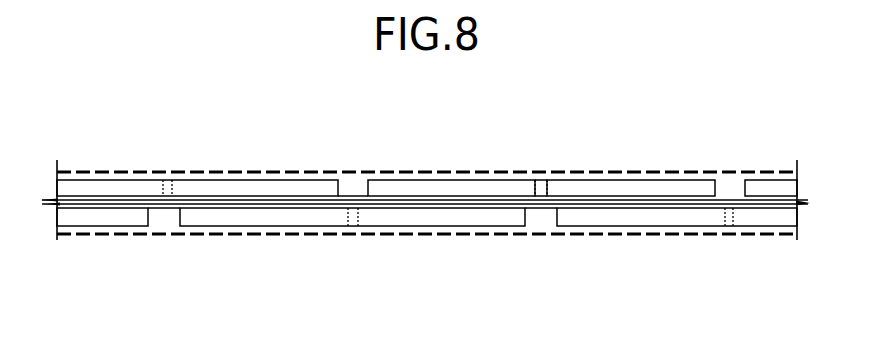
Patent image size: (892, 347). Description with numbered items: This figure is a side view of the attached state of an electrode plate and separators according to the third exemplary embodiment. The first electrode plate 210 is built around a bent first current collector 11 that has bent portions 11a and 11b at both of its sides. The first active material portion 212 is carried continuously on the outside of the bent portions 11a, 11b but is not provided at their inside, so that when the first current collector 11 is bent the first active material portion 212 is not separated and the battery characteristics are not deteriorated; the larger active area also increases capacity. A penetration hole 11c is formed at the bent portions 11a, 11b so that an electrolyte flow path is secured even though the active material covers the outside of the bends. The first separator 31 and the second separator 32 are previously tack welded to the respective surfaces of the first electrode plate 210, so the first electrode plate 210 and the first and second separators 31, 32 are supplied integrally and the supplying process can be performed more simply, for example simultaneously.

The first electrode plate 210 is at (597, 159).
The second separator 32 is at (515, 171).
The first separator 31 is at (604, 237).
The first current collector 11 is at (276, 199).
The bent portion 11a is at (163, 246).
The bent portion 11b is at (351, 246).
The penetration hole 11c is at (172, 140).
The first active material portion 212 is at (440, 179).